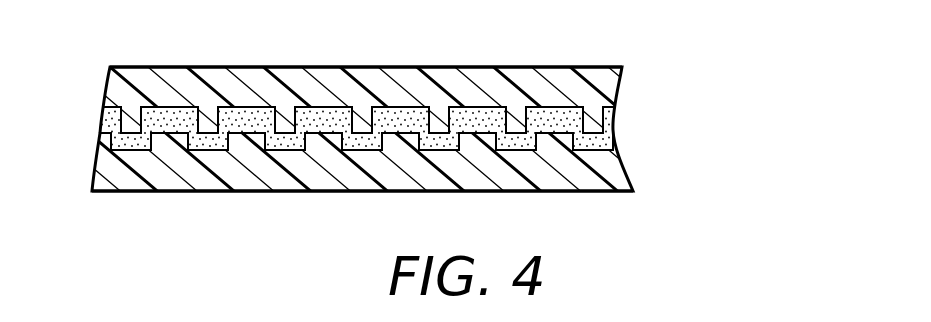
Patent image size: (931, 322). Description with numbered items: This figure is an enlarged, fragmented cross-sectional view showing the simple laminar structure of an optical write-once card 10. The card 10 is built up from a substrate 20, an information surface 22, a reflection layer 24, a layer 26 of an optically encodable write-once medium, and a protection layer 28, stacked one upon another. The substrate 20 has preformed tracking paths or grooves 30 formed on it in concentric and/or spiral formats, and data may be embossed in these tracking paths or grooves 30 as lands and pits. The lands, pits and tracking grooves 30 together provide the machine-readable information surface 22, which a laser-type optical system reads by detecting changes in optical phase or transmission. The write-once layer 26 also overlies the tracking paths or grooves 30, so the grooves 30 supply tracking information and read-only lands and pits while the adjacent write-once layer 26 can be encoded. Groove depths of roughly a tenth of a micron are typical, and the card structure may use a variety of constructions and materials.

The optical write-once card 10 is at (396, 136).
The substrate 20 is at (370, 186).
The information surface 22 is at (482, 143).
The reflection layer 24 is at (613, 129).
The layer of optically encodable write-once medium 26 is at (387, 82).
The protection layer 28 is at (432, 67).
The tracking paths or grooves 30 is at (578, 125).